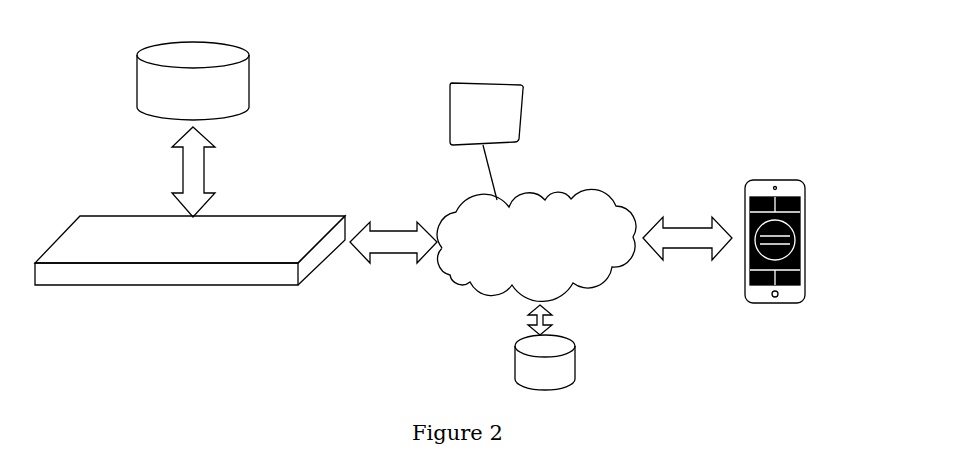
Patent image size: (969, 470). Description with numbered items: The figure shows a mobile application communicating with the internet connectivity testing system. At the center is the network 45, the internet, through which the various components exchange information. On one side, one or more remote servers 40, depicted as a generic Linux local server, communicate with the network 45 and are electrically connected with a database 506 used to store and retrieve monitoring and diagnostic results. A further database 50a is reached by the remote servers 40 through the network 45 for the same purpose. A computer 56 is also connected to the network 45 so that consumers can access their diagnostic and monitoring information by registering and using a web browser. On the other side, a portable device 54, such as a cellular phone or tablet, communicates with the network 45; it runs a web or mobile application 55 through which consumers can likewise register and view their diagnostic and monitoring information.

The database 506 is at (250, 73).
The remote server 40 is at (240, 280).
The computer 56 is at (513, 82).
The network 45 is at (570, 197).
The database 50a is at (575, 362).
The portable device 54 is at (805, 295).
The web or mobile application 55 is at (887, 132).